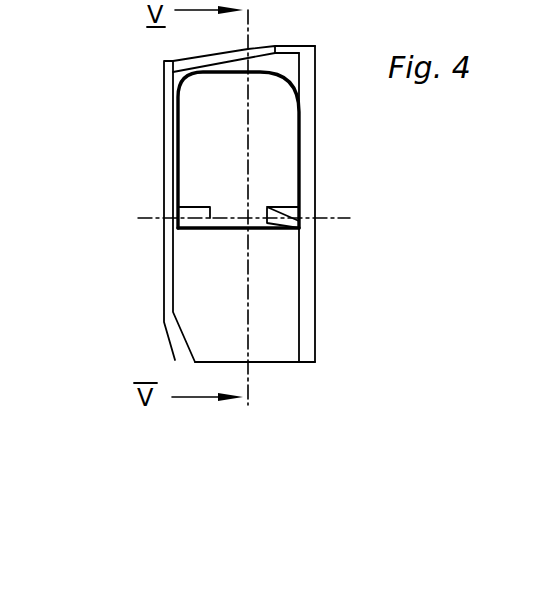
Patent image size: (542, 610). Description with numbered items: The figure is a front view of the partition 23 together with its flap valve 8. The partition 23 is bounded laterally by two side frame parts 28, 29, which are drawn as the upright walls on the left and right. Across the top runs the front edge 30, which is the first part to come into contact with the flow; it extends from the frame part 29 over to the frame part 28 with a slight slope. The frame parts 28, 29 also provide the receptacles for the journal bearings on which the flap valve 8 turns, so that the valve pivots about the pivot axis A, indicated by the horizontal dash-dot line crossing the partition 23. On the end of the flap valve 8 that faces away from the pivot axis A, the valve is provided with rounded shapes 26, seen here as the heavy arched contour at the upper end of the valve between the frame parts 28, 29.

The flap valve 8 is at (276, 128).
The partition 23 is at (276, 318).
The rounded shapes 26 is at (177, 84).
The frame part 28 is at (170, 150).
The frame part 29 is at (310, 150).
The front edge 30 is at (217, 61).
The pivot axis A is at (333, 218).